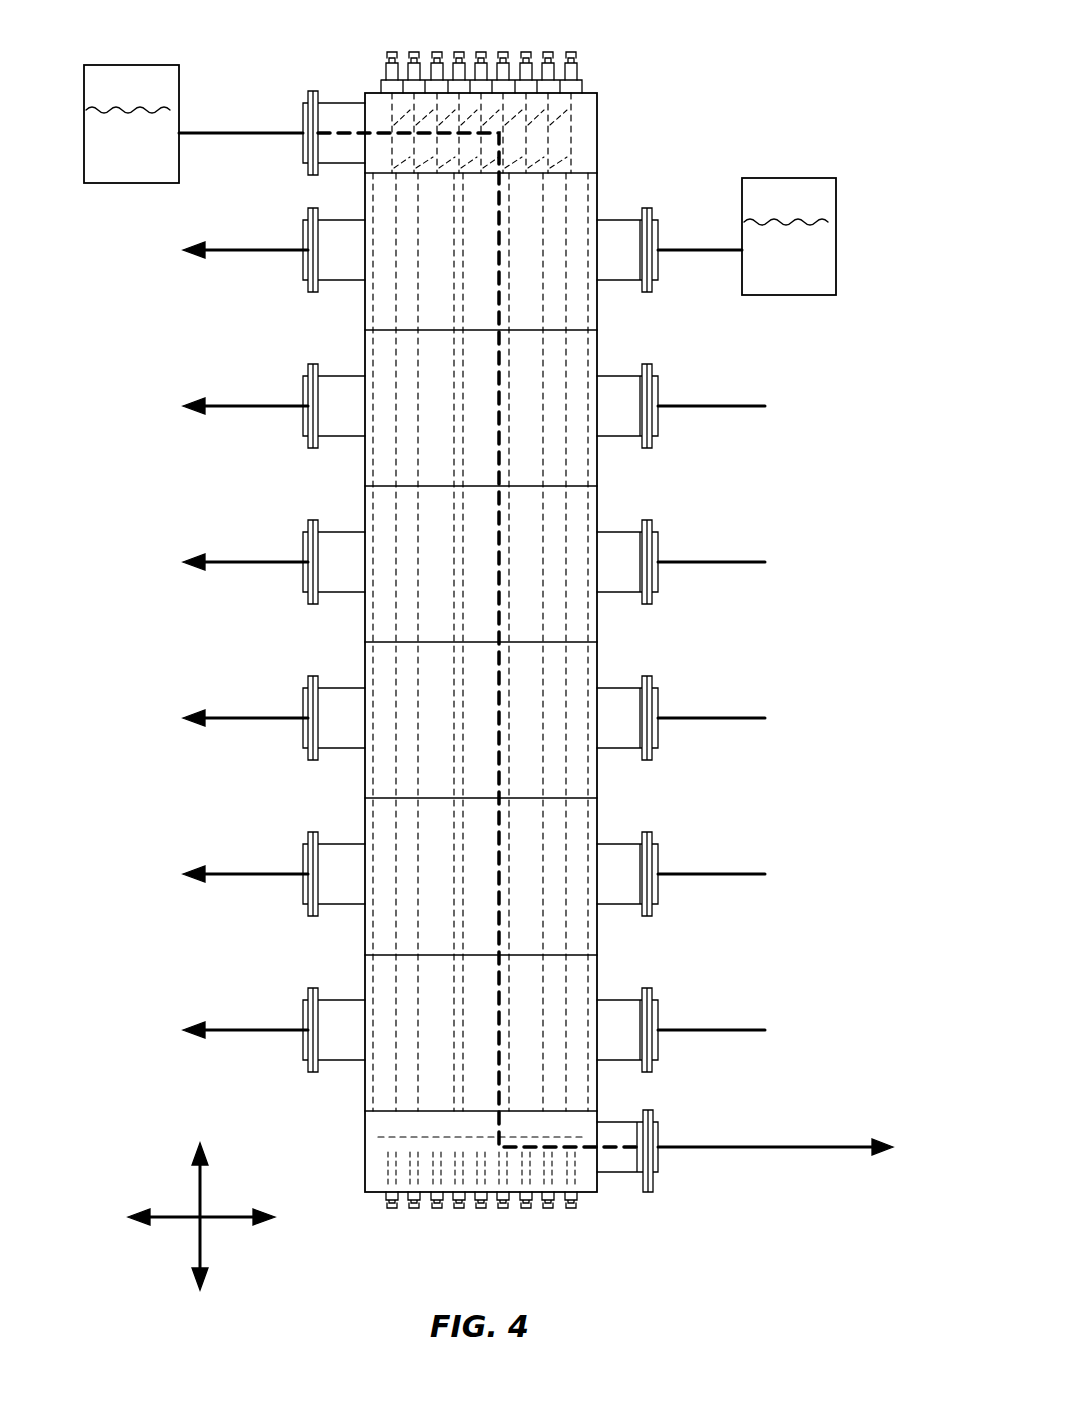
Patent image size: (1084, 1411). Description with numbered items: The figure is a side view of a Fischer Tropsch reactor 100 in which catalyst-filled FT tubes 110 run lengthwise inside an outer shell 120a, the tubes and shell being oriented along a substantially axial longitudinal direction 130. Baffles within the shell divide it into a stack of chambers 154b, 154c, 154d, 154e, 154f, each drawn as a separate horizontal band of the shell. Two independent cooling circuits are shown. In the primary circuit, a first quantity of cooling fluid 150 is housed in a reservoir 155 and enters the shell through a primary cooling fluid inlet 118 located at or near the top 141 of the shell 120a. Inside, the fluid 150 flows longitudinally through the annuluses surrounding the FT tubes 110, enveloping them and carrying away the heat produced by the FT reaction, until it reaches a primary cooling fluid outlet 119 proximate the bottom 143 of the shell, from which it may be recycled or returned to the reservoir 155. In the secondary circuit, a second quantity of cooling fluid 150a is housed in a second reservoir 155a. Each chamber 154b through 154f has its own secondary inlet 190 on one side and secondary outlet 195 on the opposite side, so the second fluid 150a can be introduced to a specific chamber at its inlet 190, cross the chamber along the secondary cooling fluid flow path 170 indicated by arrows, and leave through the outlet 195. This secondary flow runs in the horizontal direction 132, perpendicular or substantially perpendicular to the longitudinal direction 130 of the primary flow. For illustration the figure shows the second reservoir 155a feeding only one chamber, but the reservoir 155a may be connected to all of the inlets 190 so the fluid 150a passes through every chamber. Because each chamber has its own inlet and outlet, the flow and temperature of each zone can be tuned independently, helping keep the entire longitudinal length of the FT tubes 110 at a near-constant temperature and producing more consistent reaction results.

The FT reactor 100 is at (692, 124).
The FT tube 110 is at (575, 188).
The primary cooling fluid inlet 118 is at (310, 90).
The primary cooling fluid outlet 119 is at (617, 1180).
The outer shell 120a is at (592, 92).
The longitudinal direction 130 is at (197, 1178).
The horizontal direction 132 is at (233, 1212).
The top of the shell 141 is at (365, 100).
The bottom of the shell 143 is at (375, 1195).
The first quantity of cooling fluid 150 is at (150, 110).
The second quantity of cooling fluid 150a is at (803, 222).
The chamber 154b is at (597, 202).
The chamber 154c is at (597, 514).
The chamber 154d is at (597, 671).
The chamber 154e is at (597, 827).
The chamber 154f is at (597, 983).
The reservoir 155 is at (130, 183).
The second reservoir 155a is at (785, 295).
The secondary cooling fluid flow path 170 is at (222, 256).
The secondary inlet 190 is at (620, 281).
The secondary outlet 195 is at (343, 220).